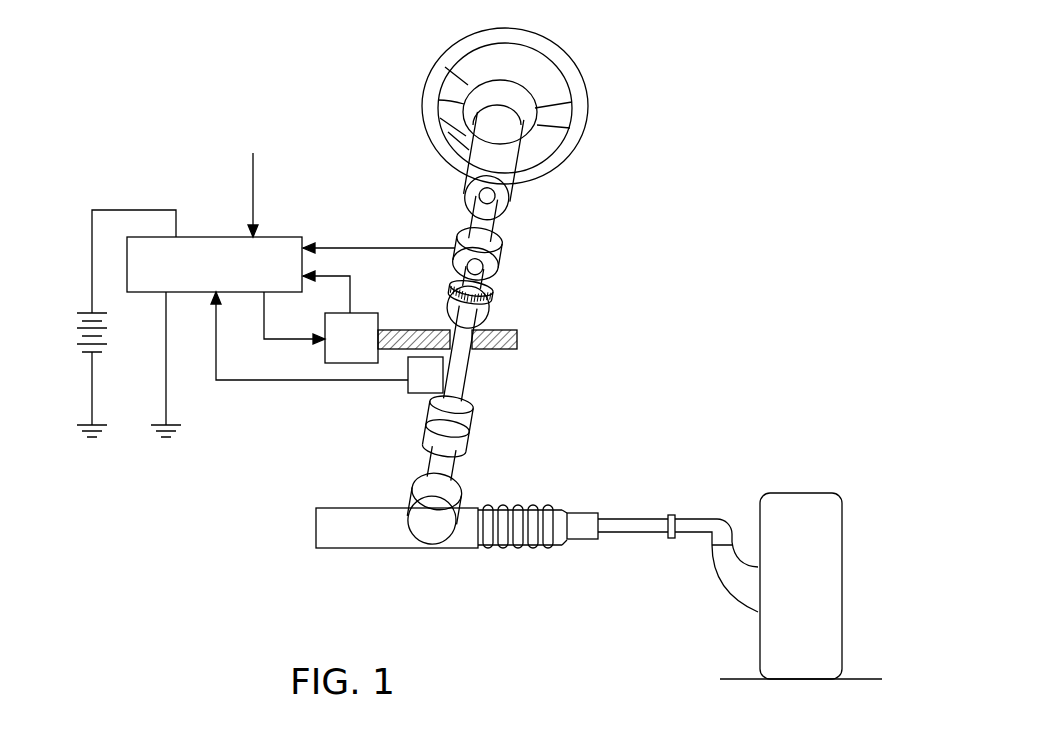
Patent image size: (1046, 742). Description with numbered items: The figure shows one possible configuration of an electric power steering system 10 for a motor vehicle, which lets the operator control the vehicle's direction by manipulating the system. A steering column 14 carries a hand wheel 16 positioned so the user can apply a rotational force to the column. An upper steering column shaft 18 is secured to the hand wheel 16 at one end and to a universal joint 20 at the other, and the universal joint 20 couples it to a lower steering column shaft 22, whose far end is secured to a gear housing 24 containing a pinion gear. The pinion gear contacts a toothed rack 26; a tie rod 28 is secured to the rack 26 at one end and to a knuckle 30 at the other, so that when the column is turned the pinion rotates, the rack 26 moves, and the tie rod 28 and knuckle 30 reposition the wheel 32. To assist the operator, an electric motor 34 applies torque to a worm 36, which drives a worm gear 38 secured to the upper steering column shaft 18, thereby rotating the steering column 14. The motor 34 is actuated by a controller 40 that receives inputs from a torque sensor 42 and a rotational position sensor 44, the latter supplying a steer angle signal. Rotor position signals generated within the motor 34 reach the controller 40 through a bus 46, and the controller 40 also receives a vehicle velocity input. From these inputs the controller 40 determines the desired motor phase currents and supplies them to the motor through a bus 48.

The steering system 10 is at (668, 225).
The steering column 14 is at (520, 130).
The hand wheel 16 is at (552, 52).
The upper steering column shaft 18 is at (492, 200).
The universal joint 20 is at (458, 412).
The lower steering column shaft 22 is at (448, 470).
The gear housing 24 is at (415, 495).
The toothed rack 26 is at (356, 540).
The tie rod 28 is at (630, 528).
The knuckle 30 is at (730, 585).
The wheel 32 is at (822, 497).
The electric motor 34 is at (330, 367).
The worm 36 is at (518, 333).
The worm gear 38 is at (490, 290).
The controller 40 is at (203, 242).
The torque sensor 42 is at (496, 252).
The rotational position sensor 44 is at (405, 398).
The bus 46 is at (353, 287).
The bus 48 is at (287, 340).